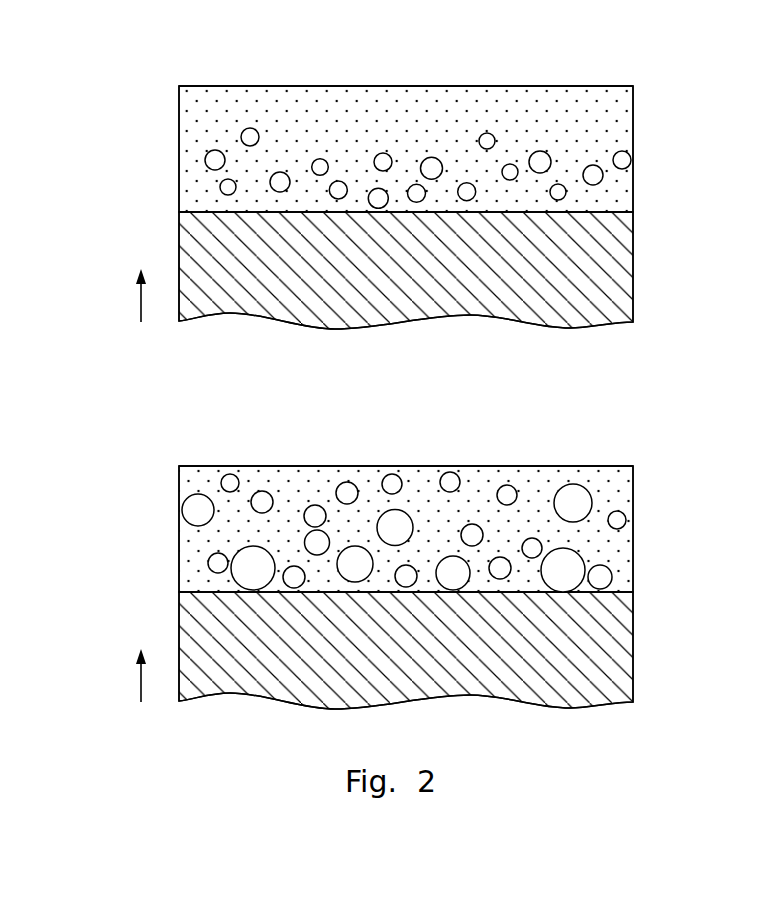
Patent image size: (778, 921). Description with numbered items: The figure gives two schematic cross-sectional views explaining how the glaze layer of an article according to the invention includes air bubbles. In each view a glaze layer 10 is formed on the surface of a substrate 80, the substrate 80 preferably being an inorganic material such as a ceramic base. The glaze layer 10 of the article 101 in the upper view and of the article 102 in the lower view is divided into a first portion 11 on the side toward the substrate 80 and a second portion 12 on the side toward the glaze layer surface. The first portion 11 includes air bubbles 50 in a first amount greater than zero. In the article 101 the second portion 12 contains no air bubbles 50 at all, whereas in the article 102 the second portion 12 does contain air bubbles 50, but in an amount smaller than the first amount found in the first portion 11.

The article 101 is at (520, 78).
The article 102 is at (519, 458).
The glaze layer 10 is at (690, 86).
The first portion 11 is at (605, 178).
The second portion 12 is at (605, 108).
The air bubbles 50 is at (212, 160).
The substrate 80 is at (608, 262).